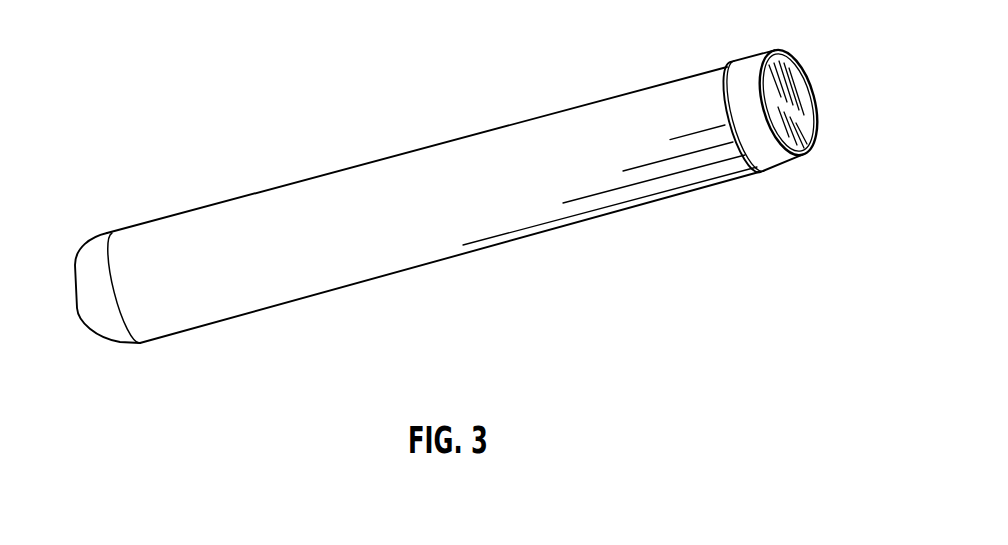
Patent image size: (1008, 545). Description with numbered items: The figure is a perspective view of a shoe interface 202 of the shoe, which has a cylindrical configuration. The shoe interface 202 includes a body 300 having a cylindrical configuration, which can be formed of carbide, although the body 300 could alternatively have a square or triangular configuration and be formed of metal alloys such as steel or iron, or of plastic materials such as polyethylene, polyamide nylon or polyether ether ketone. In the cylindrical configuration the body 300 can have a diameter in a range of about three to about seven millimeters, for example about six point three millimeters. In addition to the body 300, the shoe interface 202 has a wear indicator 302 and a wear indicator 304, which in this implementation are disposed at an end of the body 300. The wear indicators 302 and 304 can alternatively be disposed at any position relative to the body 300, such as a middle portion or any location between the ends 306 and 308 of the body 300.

The shoe interface 202 is at (556, 276).
The body 300 is at (428, 248).
The wear indicator 302 is at (777, 160).
The wear indicator 304 is at (802, 103).
The end 306 is at (82, 320).
The end 308 is at (729, 66).